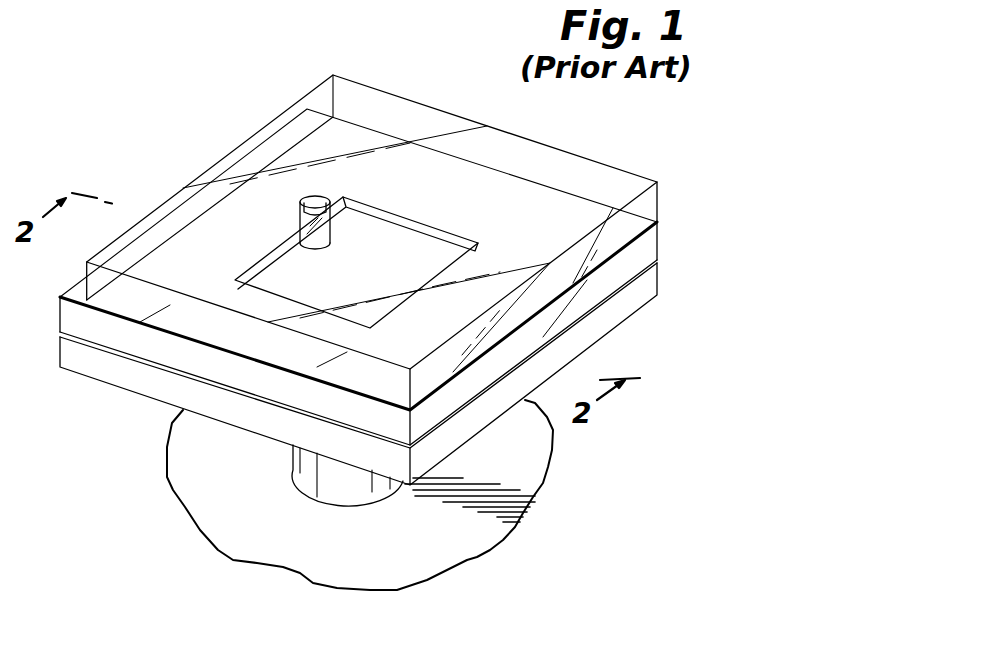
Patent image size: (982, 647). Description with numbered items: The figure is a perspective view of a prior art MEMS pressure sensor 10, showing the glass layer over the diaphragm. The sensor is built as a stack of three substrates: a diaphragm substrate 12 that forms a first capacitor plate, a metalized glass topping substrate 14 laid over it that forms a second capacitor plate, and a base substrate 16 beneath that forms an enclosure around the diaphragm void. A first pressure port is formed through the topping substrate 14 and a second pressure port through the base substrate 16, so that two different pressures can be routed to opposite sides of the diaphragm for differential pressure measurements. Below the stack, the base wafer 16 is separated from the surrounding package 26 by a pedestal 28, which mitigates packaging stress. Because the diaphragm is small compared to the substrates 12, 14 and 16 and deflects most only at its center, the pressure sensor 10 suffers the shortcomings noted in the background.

The MEMS pressure sensor 10 is at (178, 141).
The metalized glass topping substrate 14 is at (648, 205).
The diaphragm substrate 12 is at (653, 247).
The base substrate 16 is at (654, 285).
The package 26 is at (533, 470).
The pedestal 28 is at (313, 470).